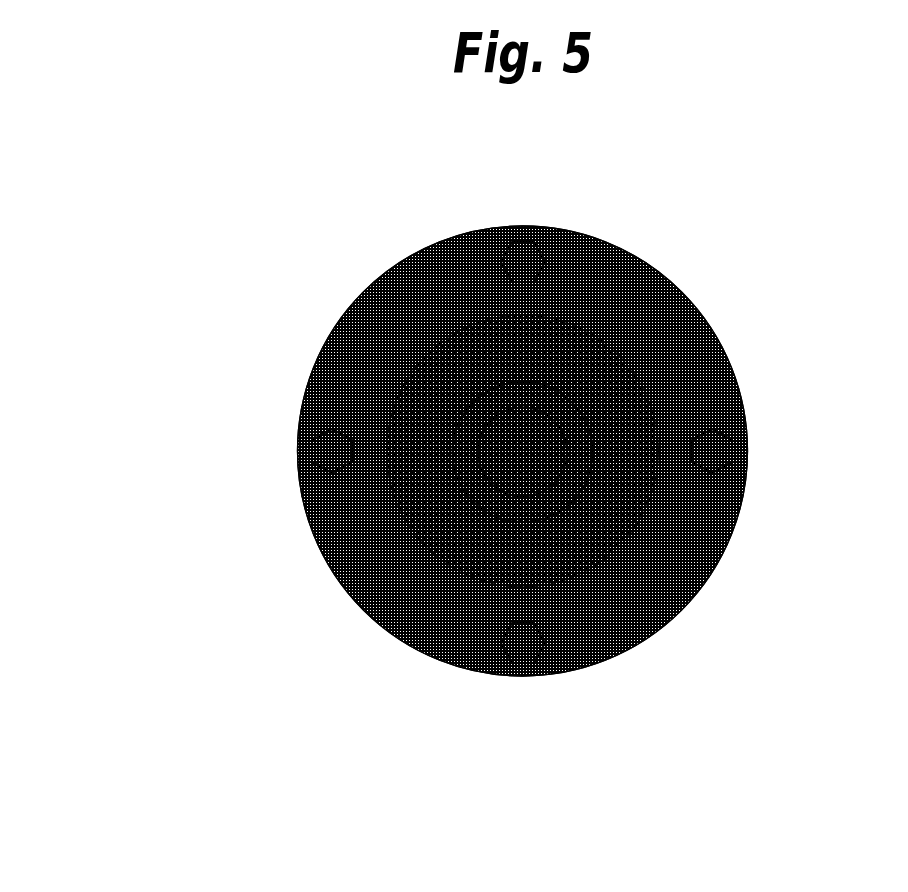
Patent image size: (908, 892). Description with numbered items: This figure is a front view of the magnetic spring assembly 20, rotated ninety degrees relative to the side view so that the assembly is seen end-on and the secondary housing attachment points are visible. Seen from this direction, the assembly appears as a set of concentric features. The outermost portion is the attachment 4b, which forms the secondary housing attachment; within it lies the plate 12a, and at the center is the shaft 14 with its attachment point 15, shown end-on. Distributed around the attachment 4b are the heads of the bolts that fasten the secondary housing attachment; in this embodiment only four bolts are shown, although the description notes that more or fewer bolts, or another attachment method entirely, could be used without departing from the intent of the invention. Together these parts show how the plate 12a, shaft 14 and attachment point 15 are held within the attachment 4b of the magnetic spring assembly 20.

The attachment 4b is at (710, 528).
The plate 12a is at (427, 412).
The shaft 14 is at (522, 450).
The attachment point 15 is at (526, 505).
The magnetic spring assembly 20 is at (390, 635).